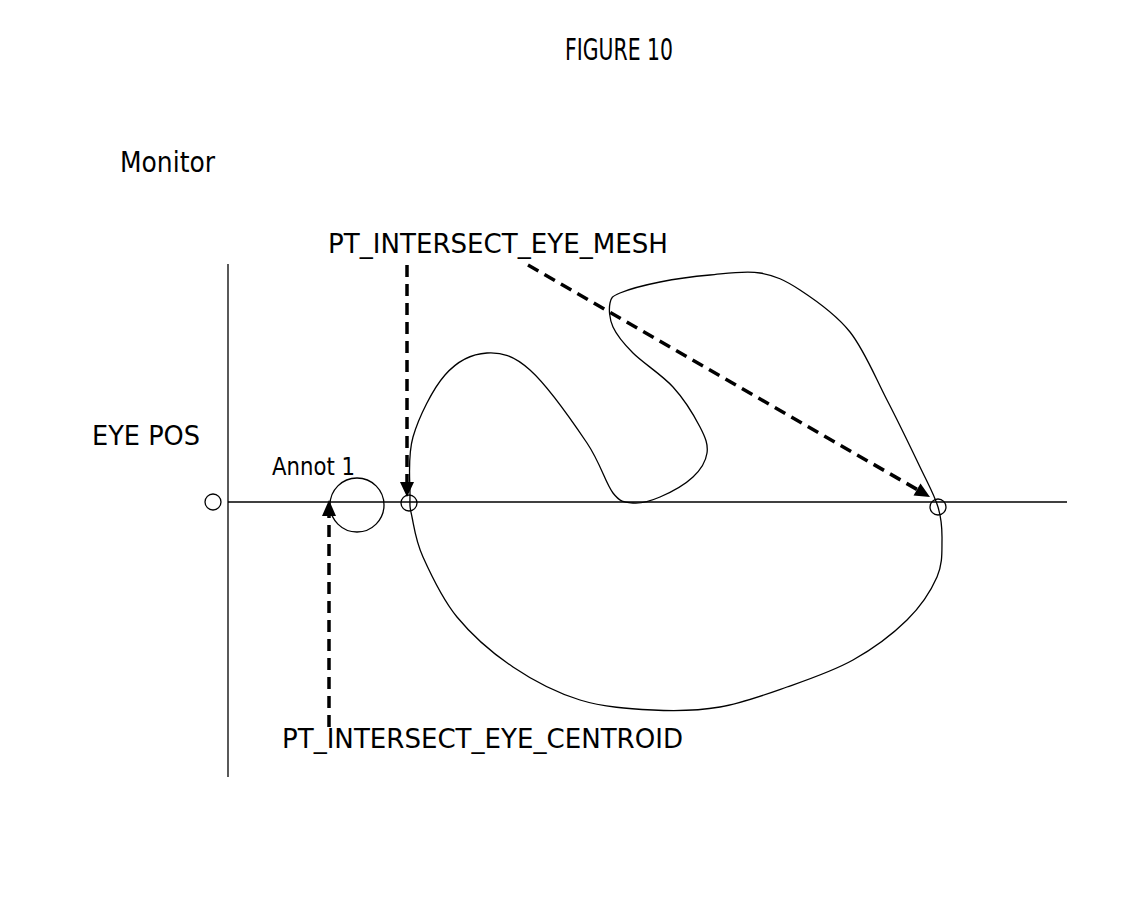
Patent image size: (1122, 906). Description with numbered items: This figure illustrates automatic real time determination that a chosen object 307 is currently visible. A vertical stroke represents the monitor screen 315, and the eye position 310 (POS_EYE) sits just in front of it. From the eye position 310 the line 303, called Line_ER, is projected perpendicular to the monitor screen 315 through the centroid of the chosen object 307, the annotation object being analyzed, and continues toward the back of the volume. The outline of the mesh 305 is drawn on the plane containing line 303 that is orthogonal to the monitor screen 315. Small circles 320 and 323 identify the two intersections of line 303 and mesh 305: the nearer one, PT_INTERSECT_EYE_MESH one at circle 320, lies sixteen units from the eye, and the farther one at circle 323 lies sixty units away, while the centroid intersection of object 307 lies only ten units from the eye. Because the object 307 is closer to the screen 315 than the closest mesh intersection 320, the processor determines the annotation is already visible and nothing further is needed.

The monitor screen 315 is at (228, 242).
The eye position 310 is at (205, 500).
The chosen object 307 is at (335, 510).
The small circle 320 is at (405, 512).
The mesh 305 is at (853, 332).
The line 303 is at (978, 502).
The small circle 323 is at (941, 512).